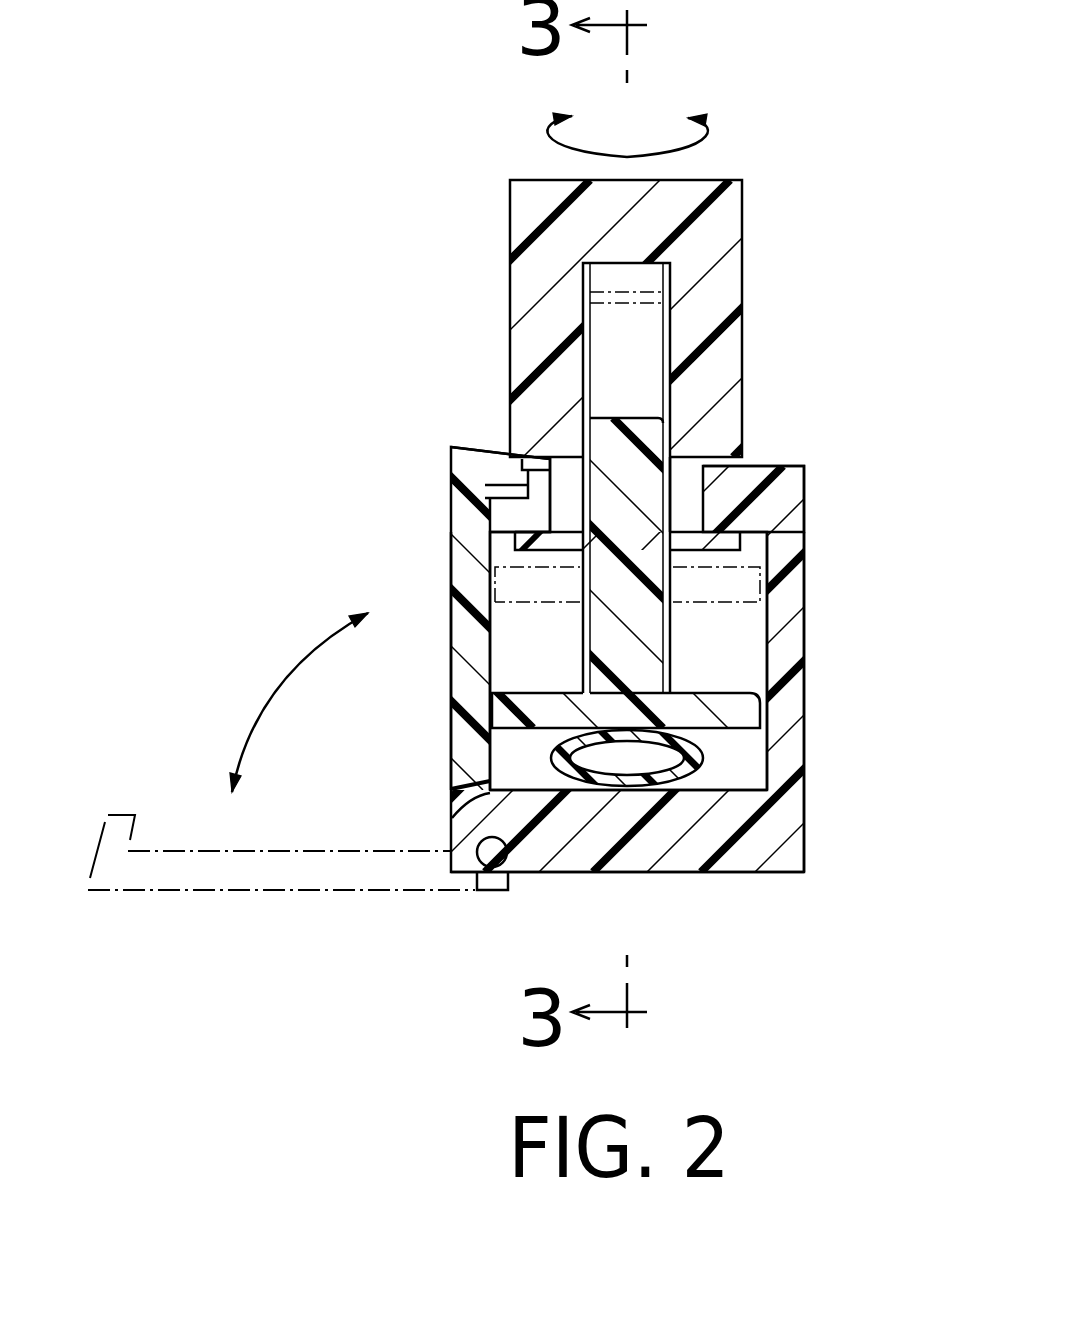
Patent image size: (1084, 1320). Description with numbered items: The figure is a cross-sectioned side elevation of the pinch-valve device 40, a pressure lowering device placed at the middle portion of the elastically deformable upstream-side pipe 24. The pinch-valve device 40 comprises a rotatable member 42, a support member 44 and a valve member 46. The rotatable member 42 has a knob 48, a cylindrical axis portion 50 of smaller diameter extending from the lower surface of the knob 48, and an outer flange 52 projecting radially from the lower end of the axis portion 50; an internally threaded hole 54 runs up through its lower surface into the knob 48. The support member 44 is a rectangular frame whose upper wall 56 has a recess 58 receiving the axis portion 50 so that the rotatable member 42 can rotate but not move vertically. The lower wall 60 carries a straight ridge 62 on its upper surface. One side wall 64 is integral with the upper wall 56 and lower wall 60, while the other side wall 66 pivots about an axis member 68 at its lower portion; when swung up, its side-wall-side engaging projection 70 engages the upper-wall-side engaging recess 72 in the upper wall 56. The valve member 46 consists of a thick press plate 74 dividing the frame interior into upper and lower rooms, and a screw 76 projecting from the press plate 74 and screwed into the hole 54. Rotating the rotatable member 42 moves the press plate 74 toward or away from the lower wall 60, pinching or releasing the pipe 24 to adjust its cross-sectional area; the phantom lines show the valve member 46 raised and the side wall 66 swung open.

The upstream-side pipe 24 is at (662, 780).
The pinch-valve device 40 is at (758, 124).
The rotatable member 42 is at (763, 215).
The support member 44 is at (812, 688).
The valve member 46 is at (685, 643).
The knob 48 is at (525, 213).
The axis portion 50 is at (696, 494).
The outer flange 52 is at (733, 542).
The internally threaded hole 54 is at (591, 350).
The upper wall 56 is at (787, 487).
The recess 58 is at (696, 473).
The lower wall 60 is at (635, 860).
The straight ridge 62 is at (518, 787).
The side wall 64 is at (788, 713).
The other side wall 66 is at (463, 632).
The axis member 68 is at (490, 855).
The side-wall-side engaging projection 70 is at (492, 467).
The upper-wall-side engaging recess 72 is at (502, 513).
The press plate 74 is at (738, 717).
The screw 76 is at (618, 432).